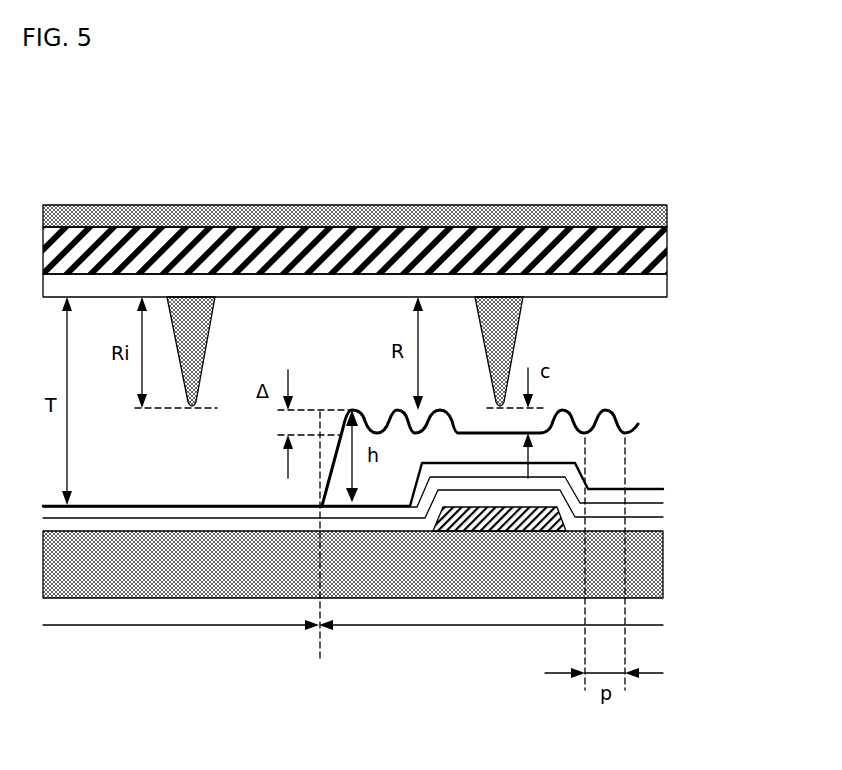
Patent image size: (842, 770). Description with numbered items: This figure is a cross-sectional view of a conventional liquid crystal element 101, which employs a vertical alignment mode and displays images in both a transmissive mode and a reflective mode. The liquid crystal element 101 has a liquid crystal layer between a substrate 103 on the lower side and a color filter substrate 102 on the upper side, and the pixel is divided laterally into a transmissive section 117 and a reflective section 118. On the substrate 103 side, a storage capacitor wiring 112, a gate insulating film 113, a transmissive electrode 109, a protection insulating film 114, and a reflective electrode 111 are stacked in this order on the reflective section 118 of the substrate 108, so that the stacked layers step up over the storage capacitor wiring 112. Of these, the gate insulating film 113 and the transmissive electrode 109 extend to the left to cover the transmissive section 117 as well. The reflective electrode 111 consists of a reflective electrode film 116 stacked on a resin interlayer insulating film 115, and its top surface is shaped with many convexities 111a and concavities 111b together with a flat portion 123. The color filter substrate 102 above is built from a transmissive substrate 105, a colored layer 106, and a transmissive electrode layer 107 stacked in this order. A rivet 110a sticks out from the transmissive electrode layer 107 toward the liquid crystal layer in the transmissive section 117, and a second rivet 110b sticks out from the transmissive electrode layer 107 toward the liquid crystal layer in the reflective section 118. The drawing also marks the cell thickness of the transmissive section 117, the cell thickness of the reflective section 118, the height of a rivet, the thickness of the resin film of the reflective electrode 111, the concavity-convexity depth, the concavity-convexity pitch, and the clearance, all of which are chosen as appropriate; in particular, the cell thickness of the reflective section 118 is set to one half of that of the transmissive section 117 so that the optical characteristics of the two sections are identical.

The liquid crystal element 101 is at (351, 183).
The color filter substrate 102 is at (728, 207).
The substrate 103 is at (778, 415).
The transmissive substrate 105 is at (662, 215).
The colored layer 106 is at (662, 251).
The transmissive electrode layer 107 is at (655, 287).
The substrate 108 is at (655, 580).
The transmissive electrode 109 is at (655, 508).
The rivet 110a is at (191, 320).
The rivet 110b is at (499, 320).
The reflective electrode 111 is at (728, 415).
The convexities 111a is at (606, 416).
The concavities 111b is at (377, 430).
The storage capacitor wiring 112 is at (540, 520).
The gate insulating film 113 is at (655, 525).
The protection insulating film 114 is at (655, 492).
The resin interlayer insulating film 115 is at (640, 458).
The reflective electrode film 116 is at (642, 425).
The transmissive section 117 is at (174, 640).
The reflective section 118 is at (498, 640).
The flat portion 123 is at (480, 431).